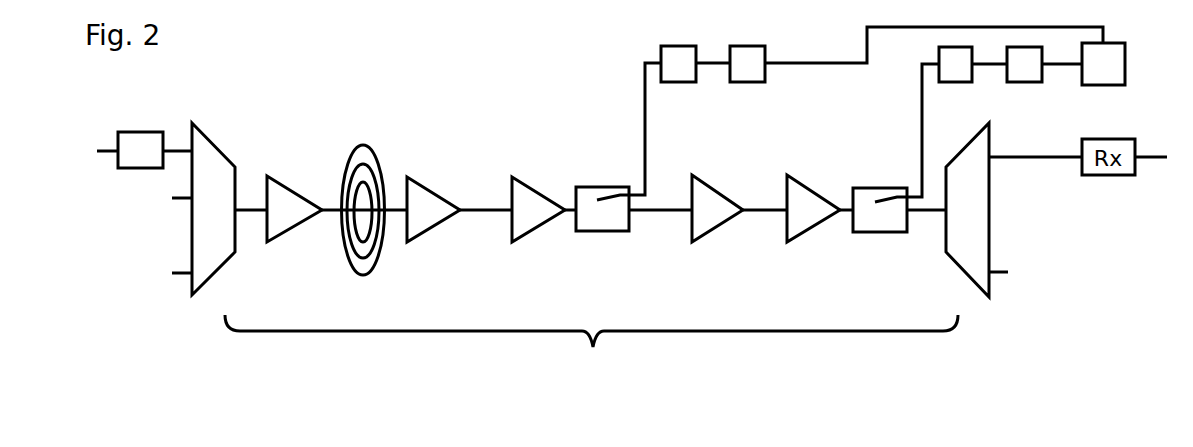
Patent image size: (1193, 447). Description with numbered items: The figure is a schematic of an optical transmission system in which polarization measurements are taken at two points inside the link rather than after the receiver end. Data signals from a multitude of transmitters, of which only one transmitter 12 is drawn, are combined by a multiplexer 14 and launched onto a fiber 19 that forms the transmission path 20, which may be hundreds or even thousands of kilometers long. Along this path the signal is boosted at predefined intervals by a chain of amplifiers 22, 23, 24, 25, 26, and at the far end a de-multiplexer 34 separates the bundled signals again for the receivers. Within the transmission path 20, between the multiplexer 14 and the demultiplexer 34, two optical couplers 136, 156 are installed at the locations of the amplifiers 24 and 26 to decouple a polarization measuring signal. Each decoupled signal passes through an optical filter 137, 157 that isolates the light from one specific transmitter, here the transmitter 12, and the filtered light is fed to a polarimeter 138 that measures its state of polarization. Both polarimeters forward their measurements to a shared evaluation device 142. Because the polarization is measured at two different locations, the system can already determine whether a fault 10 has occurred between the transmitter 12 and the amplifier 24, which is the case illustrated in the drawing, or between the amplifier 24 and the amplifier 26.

The transmitter 12 is at (153, 128).
The multiplexer 14 is at (224, 229).
The amplifier 22 is at (296, 216).
The fault 10 is at (379, 163).
The amplifier 23 is at (434, 217).
The fiber 19 is at (482, 207).
The amplifier 24 is at (539, 217).
The optical coupler 136 is at (616, 229).
The optical filter 137 is at (695, 54).
The polarimeter 138 is at (916, 54).
The amplifier 25 is at (720, 217).
The amplifier 26 is at (815, 217).
The optical coupler 156 is at (893, 225).
The optical filter 157 is at (973, 54).
The evaluation device 142 is at (1119, 75).
The de-multiplexer 34 is at (977, 221).
The transmission path 20 is at (591, 345).